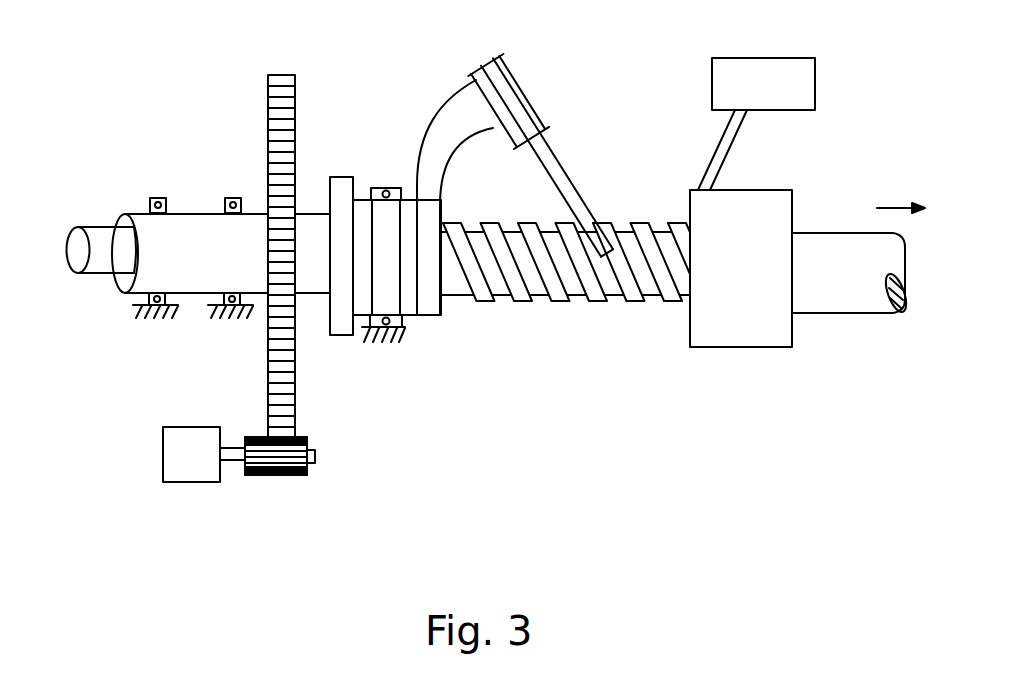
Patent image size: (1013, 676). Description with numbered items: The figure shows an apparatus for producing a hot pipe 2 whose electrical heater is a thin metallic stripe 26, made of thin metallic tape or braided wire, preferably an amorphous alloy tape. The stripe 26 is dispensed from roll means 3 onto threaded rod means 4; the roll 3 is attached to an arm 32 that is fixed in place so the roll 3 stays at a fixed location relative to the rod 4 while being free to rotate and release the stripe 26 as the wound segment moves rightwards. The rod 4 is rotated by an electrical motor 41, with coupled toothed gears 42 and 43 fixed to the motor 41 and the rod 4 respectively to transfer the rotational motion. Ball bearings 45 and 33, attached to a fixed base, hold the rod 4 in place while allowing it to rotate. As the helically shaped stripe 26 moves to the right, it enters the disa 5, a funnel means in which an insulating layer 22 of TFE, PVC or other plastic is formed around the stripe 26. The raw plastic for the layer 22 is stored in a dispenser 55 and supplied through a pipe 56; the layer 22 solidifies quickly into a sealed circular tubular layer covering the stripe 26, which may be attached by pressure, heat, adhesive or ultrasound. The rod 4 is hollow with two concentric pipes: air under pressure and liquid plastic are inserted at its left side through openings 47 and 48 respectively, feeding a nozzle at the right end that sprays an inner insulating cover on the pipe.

The hot pipe 2 is at (847, 312).
The roll means 3 is at (505, 57).
The threaded rod means 4 is at (560, 292).
The disa 5 is at (770, 197).
The insulating layer 22 is at (813, 235).
The metallic stripe 26 is at (563, 170).
The arm 32 is at (448, 130).
The ball bearing 33 is at (386, 188).
The electrical motor 41 is at (187, 475).
The toothed gear 42 is at (277, 477).
The toothed gear 43 is at (272, 75).
The ball bearings 45 is at (158, 197).
The opening 47 is at (75, 261).
The opening 48 is at (118, 287).
The dispenser 55 is at (810, 80).
The pipe 56 is at (730, 140).